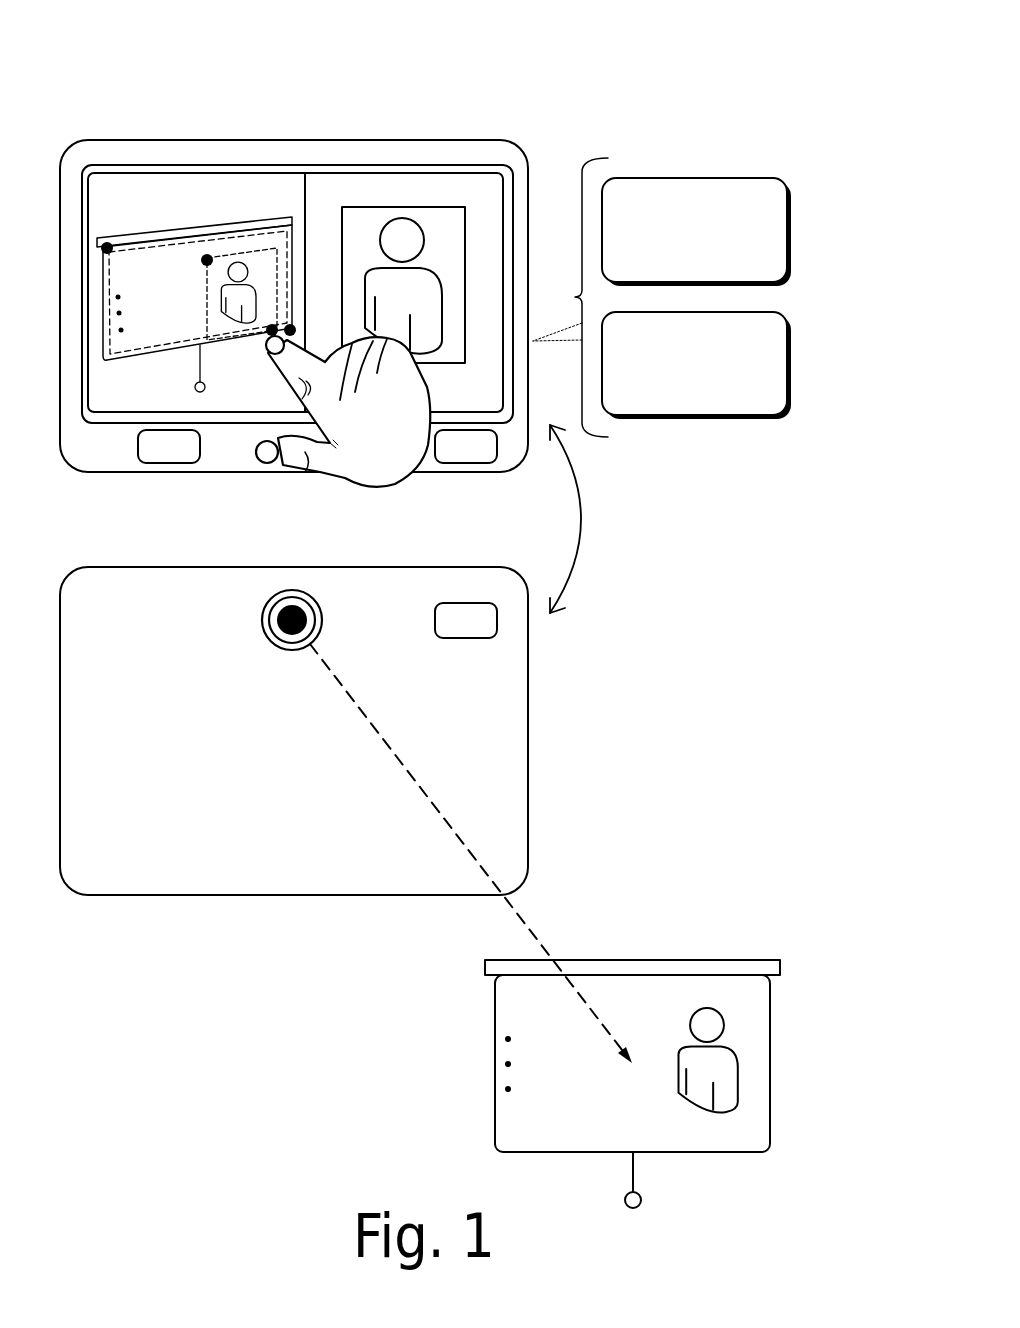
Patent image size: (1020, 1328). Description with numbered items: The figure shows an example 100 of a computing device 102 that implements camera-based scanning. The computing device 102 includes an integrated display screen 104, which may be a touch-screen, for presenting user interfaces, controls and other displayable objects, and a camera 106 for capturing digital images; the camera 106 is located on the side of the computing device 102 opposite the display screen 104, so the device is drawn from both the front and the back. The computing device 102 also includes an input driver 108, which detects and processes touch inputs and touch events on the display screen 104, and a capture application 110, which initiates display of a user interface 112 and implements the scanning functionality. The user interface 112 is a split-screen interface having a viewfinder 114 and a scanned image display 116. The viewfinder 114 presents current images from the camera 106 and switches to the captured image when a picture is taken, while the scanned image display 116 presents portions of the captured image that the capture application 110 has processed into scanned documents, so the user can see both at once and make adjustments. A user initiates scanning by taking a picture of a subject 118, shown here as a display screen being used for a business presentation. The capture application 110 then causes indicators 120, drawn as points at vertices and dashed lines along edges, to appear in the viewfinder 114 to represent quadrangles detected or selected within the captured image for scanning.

The example 100 is at (703, 72).
The computing device 102 is at (200, 140).
The display screen 104 is at (355, 165).
The camera 106 is at (280, 593).
The input driver 108 is at (673, 267).
The capture application 110 is at (673, 408).
The user interface 112 is at (403, 172).
The viewfinder 114 is at (170, 190).
The scanned image display 116 is at (480, 207).
The subject 118 is at (645, 908).
The indicators 120 is at (208, 240).